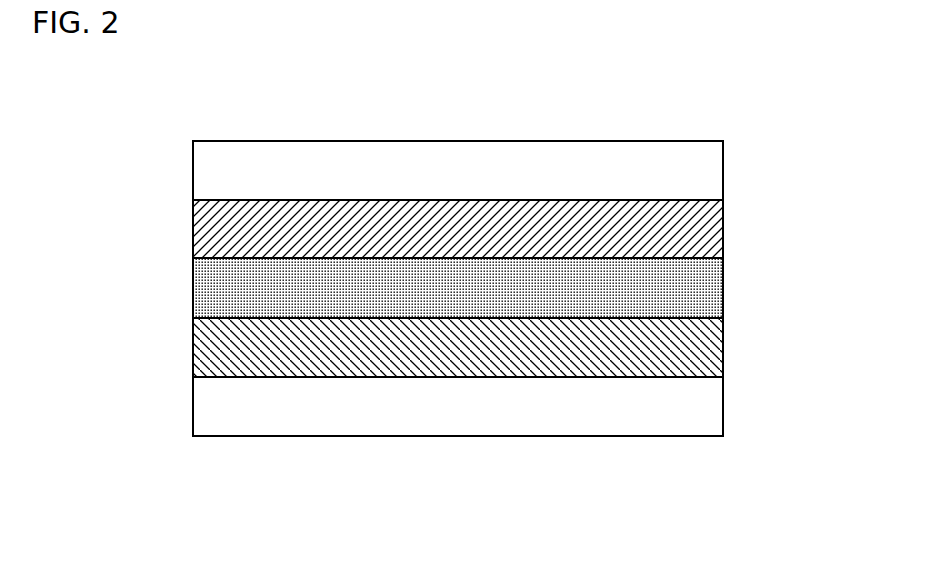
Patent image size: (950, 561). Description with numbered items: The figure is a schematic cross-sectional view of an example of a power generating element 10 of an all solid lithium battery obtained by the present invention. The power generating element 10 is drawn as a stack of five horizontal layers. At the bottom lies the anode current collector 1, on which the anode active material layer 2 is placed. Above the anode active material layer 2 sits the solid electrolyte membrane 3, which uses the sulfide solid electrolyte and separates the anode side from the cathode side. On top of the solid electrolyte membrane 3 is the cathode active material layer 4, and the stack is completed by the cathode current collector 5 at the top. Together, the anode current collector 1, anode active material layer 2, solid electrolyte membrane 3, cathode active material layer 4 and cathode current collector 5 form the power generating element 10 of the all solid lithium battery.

The power generating element of all solid lithium battery 10 is at (598, 112).
The cathode current collector 5 is at (695, 172).
The cathode active material layer 4 is at (695, 230).
The solid electrolyte membrane 3 is at (695, 289).
The anode active material layer 2 is at (695, 349).
The anode current collector 1 is at (693, 410).